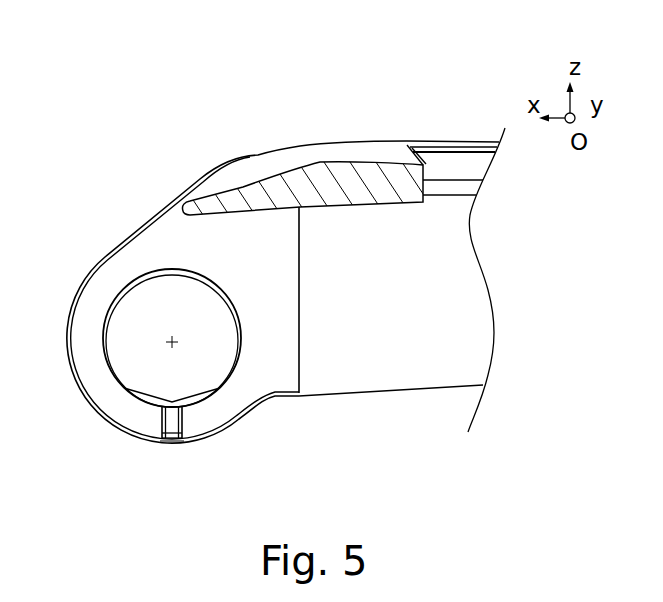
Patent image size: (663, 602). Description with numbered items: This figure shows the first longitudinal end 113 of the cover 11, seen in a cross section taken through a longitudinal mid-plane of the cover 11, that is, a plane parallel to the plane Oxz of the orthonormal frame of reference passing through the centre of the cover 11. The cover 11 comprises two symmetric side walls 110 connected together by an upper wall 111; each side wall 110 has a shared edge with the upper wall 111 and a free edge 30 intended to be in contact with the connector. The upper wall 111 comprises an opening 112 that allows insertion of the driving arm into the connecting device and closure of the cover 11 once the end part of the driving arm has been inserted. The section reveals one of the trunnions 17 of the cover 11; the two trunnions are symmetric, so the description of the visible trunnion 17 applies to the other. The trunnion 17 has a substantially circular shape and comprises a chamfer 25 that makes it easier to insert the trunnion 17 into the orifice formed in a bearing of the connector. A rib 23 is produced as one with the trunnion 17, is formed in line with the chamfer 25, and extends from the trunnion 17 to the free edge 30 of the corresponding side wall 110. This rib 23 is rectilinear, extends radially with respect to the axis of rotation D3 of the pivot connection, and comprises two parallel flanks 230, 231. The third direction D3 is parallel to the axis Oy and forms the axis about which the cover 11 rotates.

The cover 11 is at (137, 96).
The side wall 110 is at (425, 378).
The upper wall 111 is at (307, 153).
The opening 112 is at (441, 162).
The first longitudinal end 113 is at (104, 197).
The trunnion 17 is at (132, 312).
The rib 23 is at (186, 446).
The flank 230 is at (185, 413).
The flank 231 is at (160, 424).
The chamfer 25 is at (127, 391).
The free edge 30 is at (176, 448).
The third direction D3 is at (183, 339).